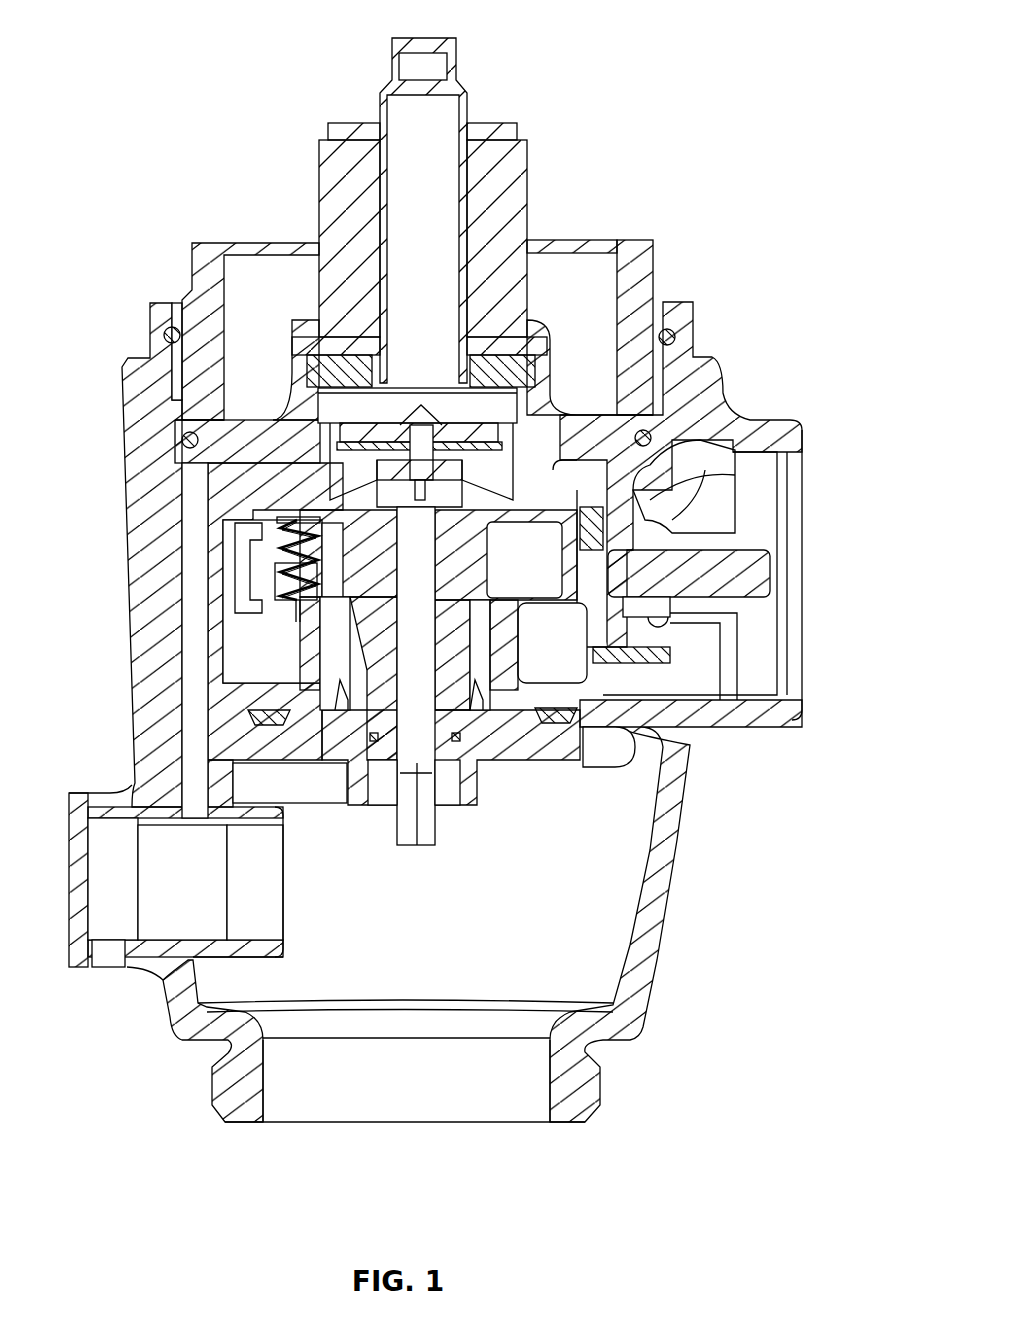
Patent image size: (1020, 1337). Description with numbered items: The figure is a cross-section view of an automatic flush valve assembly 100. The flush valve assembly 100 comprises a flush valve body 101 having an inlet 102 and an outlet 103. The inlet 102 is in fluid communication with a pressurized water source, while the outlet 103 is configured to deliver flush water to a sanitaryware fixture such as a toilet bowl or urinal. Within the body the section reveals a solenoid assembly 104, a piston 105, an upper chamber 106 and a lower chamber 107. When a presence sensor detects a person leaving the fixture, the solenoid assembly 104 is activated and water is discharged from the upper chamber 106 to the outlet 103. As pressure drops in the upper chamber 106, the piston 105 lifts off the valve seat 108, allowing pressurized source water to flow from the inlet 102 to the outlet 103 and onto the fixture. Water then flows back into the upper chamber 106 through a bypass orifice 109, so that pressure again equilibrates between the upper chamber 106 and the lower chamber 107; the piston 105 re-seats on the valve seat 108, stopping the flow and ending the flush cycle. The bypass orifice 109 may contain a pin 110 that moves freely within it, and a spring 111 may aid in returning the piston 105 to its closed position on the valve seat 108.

The automatic flush valve assembly 100 is at (634, 37).
The flush valve body 101 is at (685, 906).
The inlet 102 is at (805, 496).
The outlet 103 is at (498, 1137).
The solenoid assembly 104 is at (530, 229).
The piston 105 is at (513, 648).
The upper chamber 106 is at (327, 543).
The lower chamber 107 is at (648, 673).
The valve seat 108 is at (262, 737).
The bypass orifice 109 is at (298, 625).
The pin 110 is at (272, 598).
The spring 111 is at (257, 588).